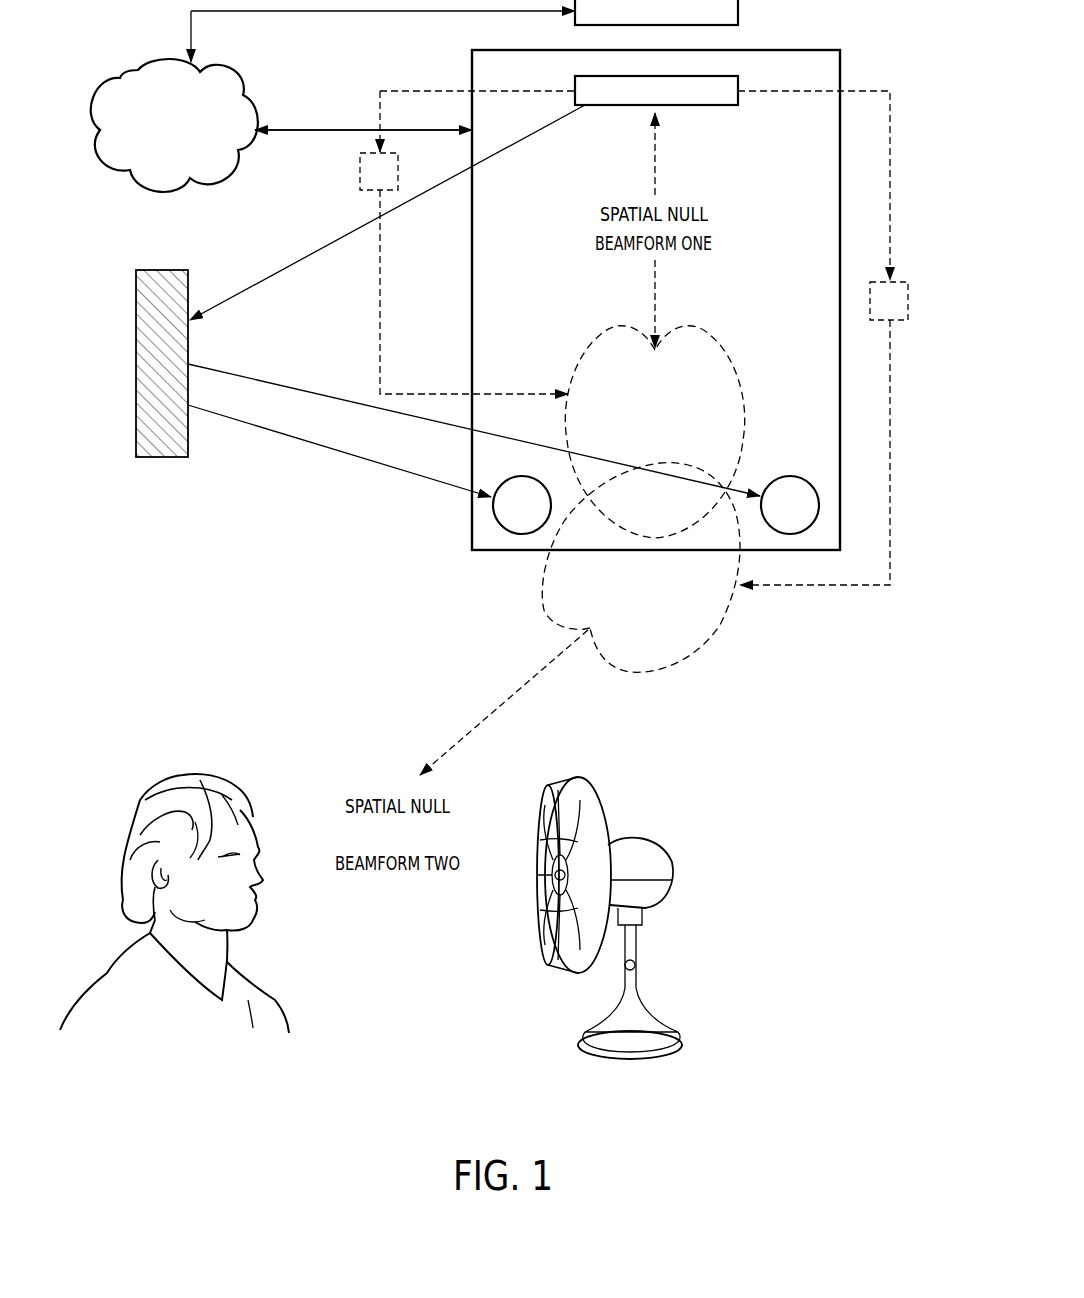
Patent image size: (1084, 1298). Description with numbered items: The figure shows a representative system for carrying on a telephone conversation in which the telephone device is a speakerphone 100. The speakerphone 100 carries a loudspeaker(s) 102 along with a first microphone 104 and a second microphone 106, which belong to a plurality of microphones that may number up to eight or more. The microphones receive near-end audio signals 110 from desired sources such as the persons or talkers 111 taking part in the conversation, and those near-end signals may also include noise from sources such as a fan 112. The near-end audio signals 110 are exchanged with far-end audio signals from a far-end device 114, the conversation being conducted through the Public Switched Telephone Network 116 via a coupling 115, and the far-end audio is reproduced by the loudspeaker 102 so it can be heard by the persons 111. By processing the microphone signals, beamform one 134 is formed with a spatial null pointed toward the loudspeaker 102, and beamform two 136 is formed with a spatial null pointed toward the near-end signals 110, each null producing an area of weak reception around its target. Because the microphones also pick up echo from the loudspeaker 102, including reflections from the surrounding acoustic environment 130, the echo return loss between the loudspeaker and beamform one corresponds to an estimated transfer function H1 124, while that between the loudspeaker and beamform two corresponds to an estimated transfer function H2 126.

The speakerphone 100 is at (470, 320).
The loudspeaker(s) 102 is at (716, 106).
The first microphone 104 is at (522, 534).
The second microphone 106 is at (800, 478).
The near-end audio signals 110 is at (348, 1062).
The persons or talkers 111 is at (198, 776).
The fan 112 is at (648, 845).
The far-end device 114 is at (739, 10).
The coupling 115 is at (292, 128).
The Public Switched Telephone Network (PSTN) 116 is at (138, 65).
The estimated transfer function H1 124 is at (358, 167).
The estimated transfer function H2 126 is at (910, 280).
The surrounding acoustic environment 130 is at (160, 458).
The beamform one 134 is at (712, 336).
The beamform two 136 is at (738, 630).